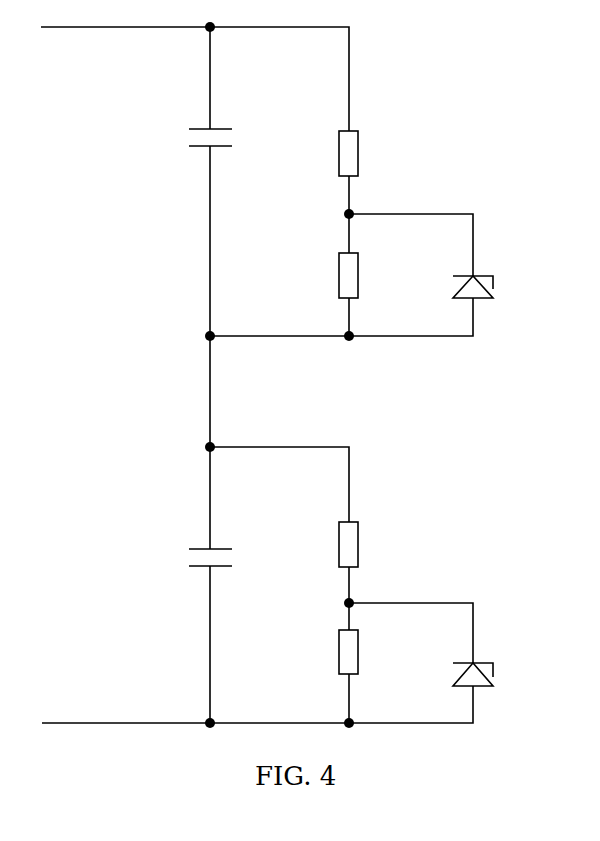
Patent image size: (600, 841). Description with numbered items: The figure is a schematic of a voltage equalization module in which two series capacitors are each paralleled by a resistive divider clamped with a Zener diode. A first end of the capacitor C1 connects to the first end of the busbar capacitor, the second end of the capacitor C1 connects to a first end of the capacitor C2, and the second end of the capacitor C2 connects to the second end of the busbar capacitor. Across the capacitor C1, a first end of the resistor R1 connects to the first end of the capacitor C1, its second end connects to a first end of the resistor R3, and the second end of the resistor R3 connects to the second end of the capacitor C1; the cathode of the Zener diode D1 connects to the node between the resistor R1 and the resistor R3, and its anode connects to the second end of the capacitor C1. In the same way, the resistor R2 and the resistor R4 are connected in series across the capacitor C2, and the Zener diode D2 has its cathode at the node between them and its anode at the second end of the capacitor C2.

The capacitor C1 is at (189, 138).
The capacitor C2 is at (189, 558).
The resistor R1 is at (369, 153).
The resistor R2 is at (369, 544).
The resistor R3 is at (368, 275).
The resistor R4 is at (368, 652).
The Zener diode D1 is at (495, 289).
The Zener diode D2 is at (496, 675).